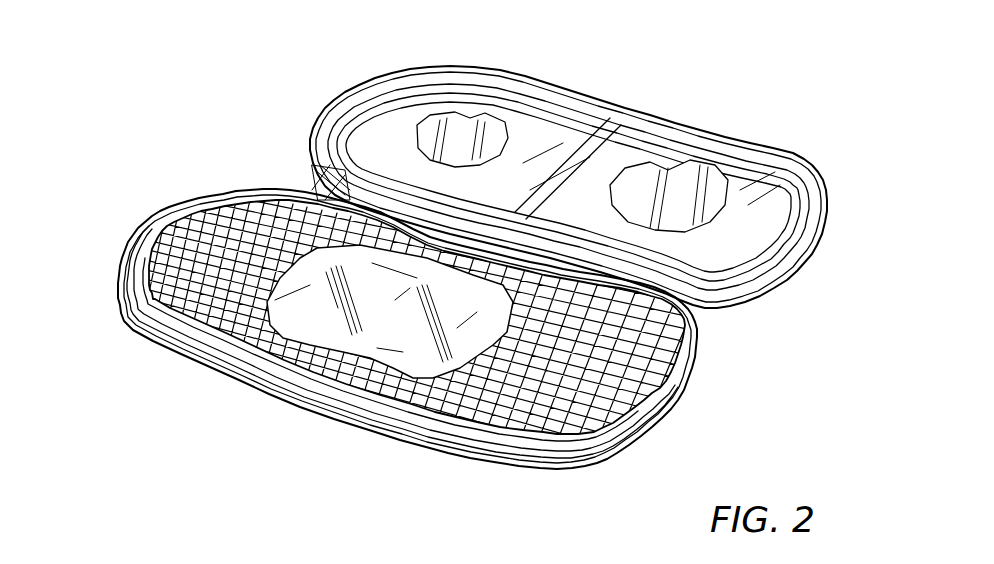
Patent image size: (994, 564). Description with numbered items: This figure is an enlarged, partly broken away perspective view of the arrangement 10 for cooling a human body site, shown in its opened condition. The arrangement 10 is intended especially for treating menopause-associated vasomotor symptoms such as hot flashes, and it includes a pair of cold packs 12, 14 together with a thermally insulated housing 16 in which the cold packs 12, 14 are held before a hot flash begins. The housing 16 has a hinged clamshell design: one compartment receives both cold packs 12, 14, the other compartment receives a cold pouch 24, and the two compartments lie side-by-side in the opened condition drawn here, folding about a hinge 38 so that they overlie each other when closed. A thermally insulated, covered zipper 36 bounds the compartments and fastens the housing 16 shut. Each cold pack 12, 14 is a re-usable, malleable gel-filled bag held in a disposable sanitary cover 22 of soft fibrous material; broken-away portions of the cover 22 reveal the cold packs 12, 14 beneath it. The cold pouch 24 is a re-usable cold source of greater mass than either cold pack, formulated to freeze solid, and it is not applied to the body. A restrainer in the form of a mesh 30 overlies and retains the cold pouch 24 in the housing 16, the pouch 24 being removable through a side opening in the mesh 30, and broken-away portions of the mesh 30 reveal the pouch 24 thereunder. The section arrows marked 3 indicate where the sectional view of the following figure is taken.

The arrangement 10 is at (250, 142).
The cold pack 12 is at (468, 125).
The cold pack 14 is at (654, 170).
The thermally insulated housing 16 is at (586, 173).
The sanitary sleeve or cover 22 is at (402, 117).
The cold pouch 24 is at (297, 282).
The mesh 30 is at (399, 342).
The zipper 36 is at (130, 243).
The hinge 38 is at (322, 183).
The section line 3 is at (760, 133).